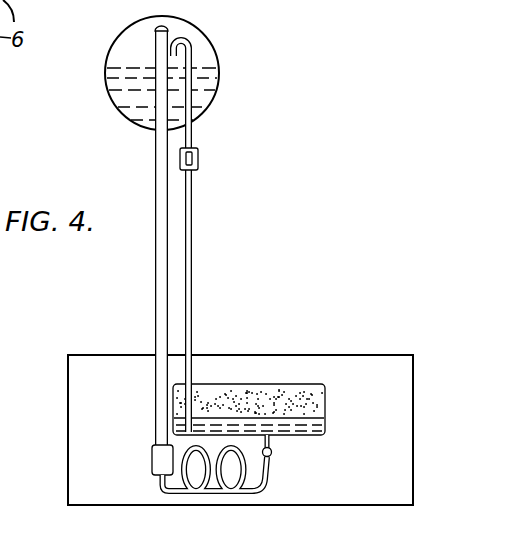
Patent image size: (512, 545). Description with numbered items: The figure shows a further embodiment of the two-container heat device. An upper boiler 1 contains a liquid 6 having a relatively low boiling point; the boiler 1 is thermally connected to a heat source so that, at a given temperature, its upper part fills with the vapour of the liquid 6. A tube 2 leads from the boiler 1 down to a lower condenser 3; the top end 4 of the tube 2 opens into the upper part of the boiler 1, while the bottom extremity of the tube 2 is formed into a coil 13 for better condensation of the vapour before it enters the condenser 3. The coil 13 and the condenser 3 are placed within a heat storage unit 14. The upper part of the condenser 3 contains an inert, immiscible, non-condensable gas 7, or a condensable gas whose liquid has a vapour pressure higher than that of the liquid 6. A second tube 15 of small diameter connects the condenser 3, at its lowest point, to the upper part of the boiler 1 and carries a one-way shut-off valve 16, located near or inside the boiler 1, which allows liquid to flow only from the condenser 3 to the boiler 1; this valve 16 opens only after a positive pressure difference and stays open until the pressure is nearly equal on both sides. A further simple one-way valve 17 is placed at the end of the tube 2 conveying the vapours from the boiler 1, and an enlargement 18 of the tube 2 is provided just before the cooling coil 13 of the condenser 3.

The boiler 1 is at (218, 48).
The tube 2 is at (158, 248).
The condenser 3 is at (320, 436).
The top end 4 is at (161, 26).
The liquid 6 is at (208, 85).
The gas 7 is at (237, 395).
The coil 13 is at (264, 492).
The heat storage unit 14 is at (415, 497).
The second tube 15 is at (194, 232).
The one-way shut-off valve 16 is at (198, 158).
The one-way valve 17 is at (273, 456).
The enlargement 18 is at (152, 468).